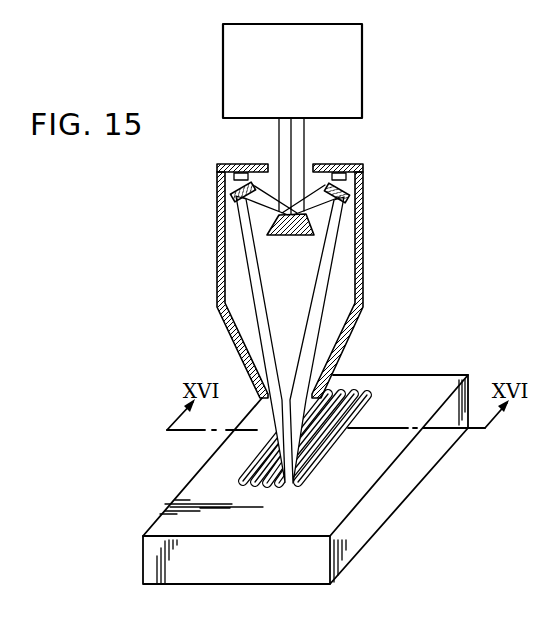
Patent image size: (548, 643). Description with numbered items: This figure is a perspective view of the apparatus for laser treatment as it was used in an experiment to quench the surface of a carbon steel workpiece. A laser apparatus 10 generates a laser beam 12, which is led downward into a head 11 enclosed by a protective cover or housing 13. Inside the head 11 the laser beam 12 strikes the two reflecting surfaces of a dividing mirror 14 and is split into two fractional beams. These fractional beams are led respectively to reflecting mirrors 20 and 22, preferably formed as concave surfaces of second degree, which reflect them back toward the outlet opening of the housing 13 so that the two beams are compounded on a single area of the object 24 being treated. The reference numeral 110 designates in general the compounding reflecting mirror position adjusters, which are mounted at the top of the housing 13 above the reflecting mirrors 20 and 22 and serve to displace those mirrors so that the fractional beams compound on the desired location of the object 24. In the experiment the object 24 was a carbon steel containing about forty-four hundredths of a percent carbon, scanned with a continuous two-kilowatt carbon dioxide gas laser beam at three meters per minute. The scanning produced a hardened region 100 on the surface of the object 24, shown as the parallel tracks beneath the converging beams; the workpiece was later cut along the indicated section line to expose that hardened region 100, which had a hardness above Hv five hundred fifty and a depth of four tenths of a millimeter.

The laser apparatus 10 is at (362, 60).
The head 11 is at (333, 147).
The laser beam 12 is at (279, 146).
The protective cover or housing 13 is at (220, 274).
The dividing mirror 14 is at (285, 237).
The reflecting mirror 20 is at (357, 190).
The reflecting mirror 22 is at (232, 186).
The object being treated 24 is at (143, 558).
The hardened region 100 is at (240, 477).
The compounding reflecting mirror position adjusters 110 is at (222, 170).